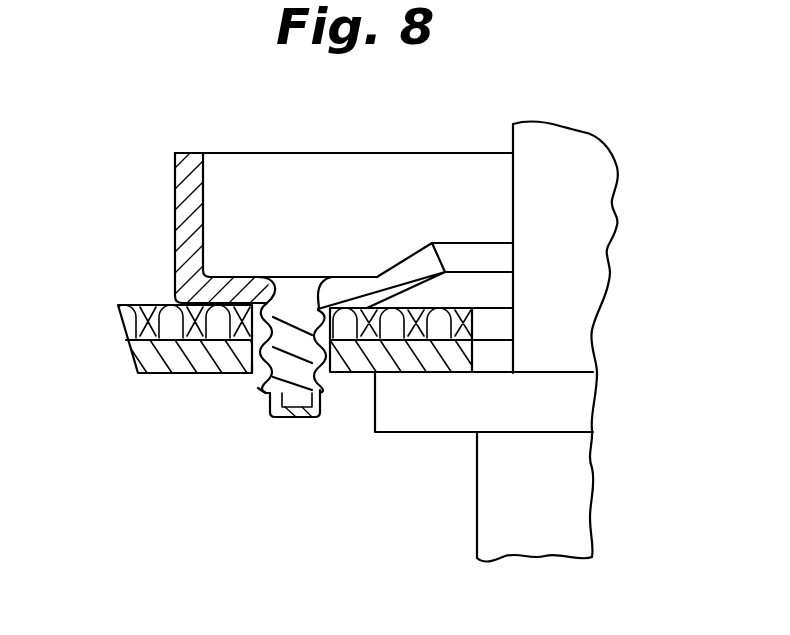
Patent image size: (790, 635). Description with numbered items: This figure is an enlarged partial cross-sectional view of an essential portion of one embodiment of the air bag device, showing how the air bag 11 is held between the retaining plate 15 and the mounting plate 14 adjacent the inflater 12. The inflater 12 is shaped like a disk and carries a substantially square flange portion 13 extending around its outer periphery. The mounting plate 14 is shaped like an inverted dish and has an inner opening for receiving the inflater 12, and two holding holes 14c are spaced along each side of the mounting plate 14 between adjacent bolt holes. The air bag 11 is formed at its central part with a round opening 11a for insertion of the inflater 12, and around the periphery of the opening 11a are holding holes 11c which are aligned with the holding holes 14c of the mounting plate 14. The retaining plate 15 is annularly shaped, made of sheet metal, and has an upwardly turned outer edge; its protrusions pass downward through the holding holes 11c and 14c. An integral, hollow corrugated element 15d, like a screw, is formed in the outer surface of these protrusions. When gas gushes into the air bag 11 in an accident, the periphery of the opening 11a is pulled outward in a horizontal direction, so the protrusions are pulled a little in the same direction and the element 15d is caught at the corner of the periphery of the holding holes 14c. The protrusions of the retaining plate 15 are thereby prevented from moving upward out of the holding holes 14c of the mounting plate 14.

The air bag 11 is at (117, 310).
The round opening 11a is at (472, 330).
The holding holes 11c is at (291, 316).
The inflater 12 is at (585, 263).
The flange portion 13 is at (578, 395).
The mounting plate 14 is at (153, 373).
The holding holes 14c is at (232, 373).
The retaining plate 15 is at (183, 219).
The corrugated element 15d is at (257, 388).